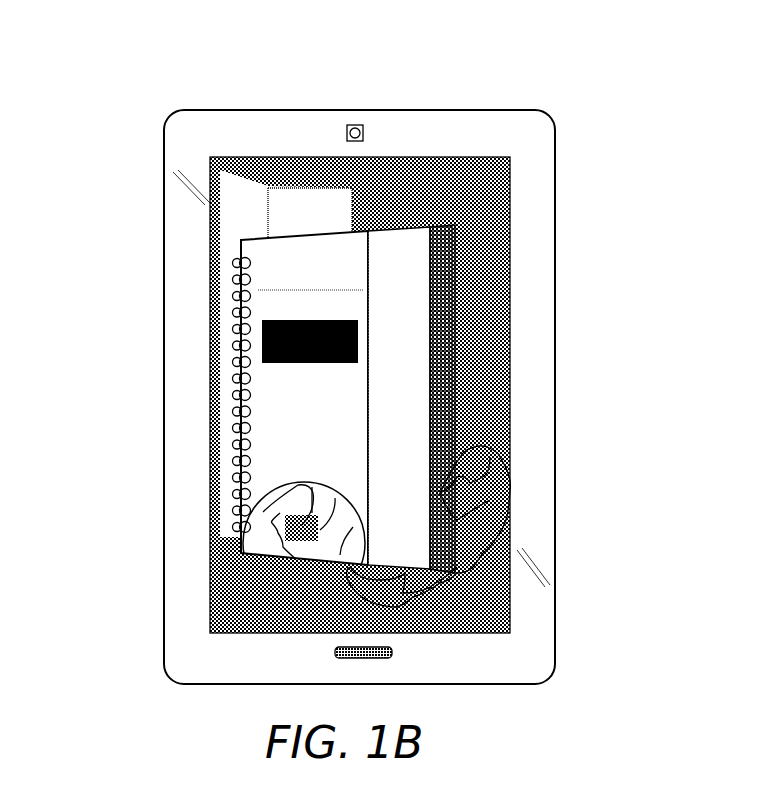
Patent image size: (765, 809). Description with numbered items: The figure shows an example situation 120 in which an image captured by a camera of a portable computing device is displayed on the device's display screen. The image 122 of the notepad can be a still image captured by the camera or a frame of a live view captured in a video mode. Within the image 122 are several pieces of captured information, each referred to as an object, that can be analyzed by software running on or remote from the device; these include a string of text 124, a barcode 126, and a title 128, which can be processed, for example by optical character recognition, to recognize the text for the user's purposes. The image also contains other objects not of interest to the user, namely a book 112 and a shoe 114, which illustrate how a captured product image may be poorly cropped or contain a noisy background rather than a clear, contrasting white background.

The example situation 120 is at (89, 100).
The book 112 is at (238, 185).
The title 128 is at (370, 232).
The image of the notepad 122 is at (235, 285).
The string of text 124 is at (290, 405).
The barcode 126 is at (287, 517).
The shoe 114 is at (508, 478).